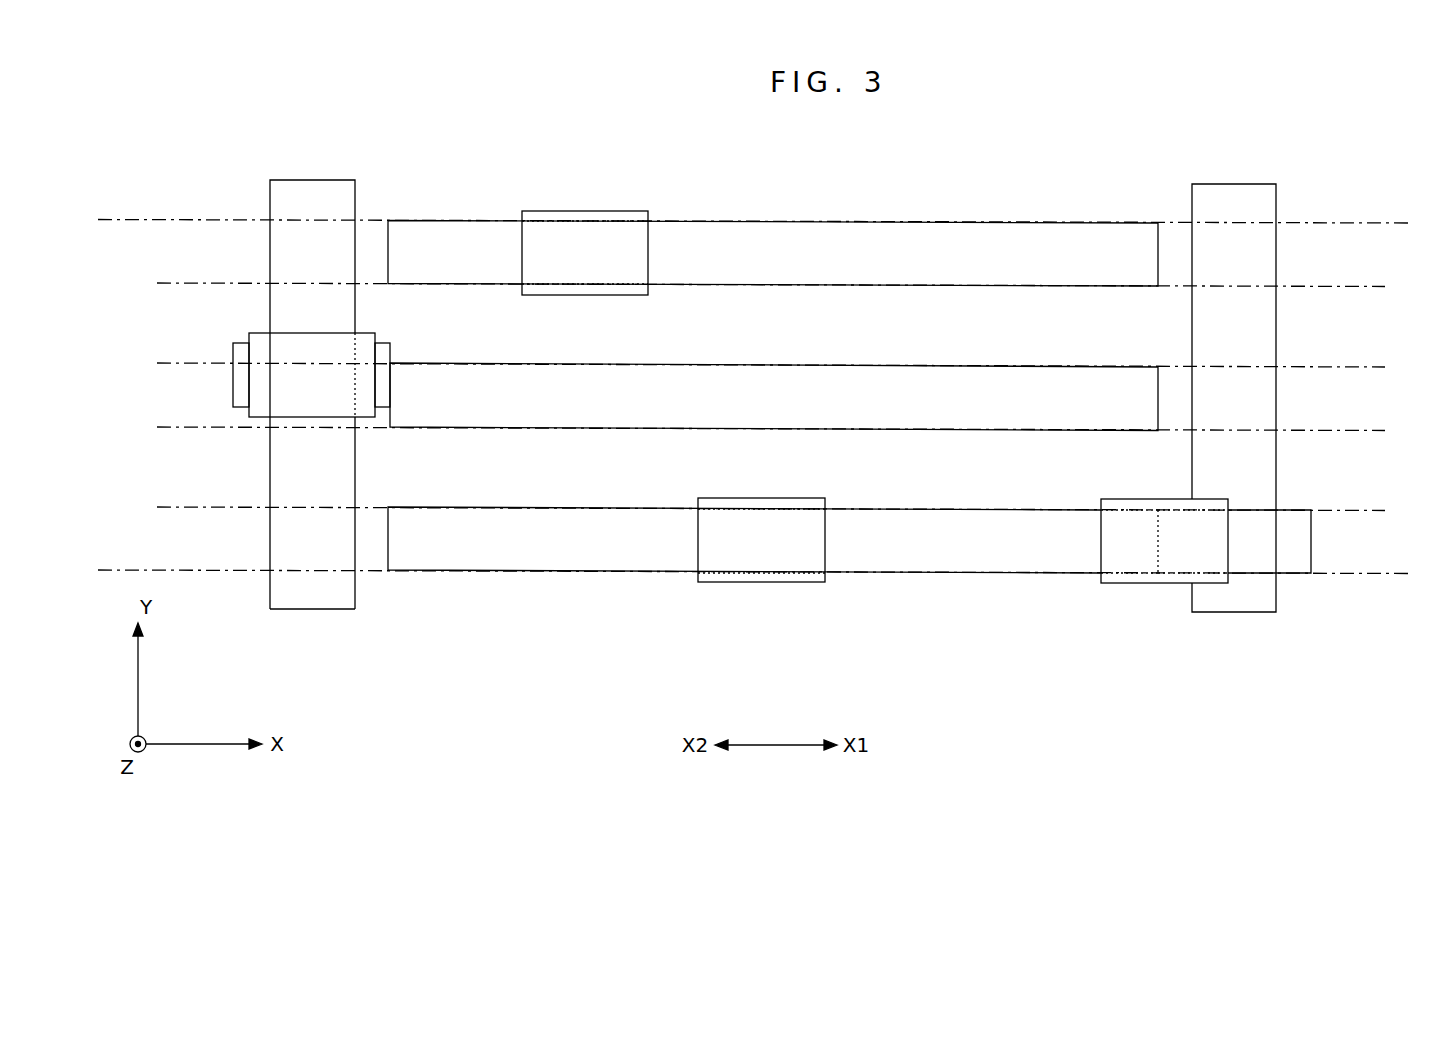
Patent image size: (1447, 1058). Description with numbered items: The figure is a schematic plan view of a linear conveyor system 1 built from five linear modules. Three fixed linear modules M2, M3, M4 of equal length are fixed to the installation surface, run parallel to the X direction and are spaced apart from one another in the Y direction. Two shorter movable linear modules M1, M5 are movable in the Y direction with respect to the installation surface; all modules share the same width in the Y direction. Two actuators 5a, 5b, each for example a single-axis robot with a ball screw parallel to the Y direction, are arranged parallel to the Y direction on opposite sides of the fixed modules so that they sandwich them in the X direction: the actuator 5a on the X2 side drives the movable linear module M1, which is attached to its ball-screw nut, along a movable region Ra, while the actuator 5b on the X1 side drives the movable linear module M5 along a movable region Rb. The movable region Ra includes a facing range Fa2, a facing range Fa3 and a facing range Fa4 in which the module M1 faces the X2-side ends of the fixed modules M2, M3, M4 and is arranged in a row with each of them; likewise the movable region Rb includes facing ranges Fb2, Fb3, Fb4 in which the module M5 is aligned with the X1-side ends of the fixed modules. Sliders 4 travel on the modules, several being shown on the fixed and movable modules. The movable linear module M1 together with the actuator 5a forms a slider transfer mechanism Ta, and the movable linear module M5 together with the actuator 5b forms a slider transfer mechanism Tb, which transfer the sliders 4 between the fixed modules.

The linear conveyor system 1 is at (1354, 91).
The slider 4 is at (586, 243).
The actuator 5a is at (307, 466).
The actuator 5b is at (1260, 340).
The movable linear module M1 is at (242, 358).
The fixed linear module M2 is at (822, 270).
The fixed linear module M3 is at (855, 405).
The fixed linear module M4 is at (940, 555).
The movable linear module M5 is at (1299, 565).
The slider transfer mechanism Ta is at (312, 170).
The slider transfer mechanism Tb is at (1238, 174).
The movable region Ra is at (111, 220).
The movable region Rb is at (1405, 223).
The facing range Fa2 is at (183, 220).
The facing range Fa3 is at (183, 363).
The facing range Fa4 is at (183, 507).
The facing range Fb2 is at (1343, 223).
The facing range Fb3 is at (1343, 367).
The facing range Fb4 is at (1343, 510).